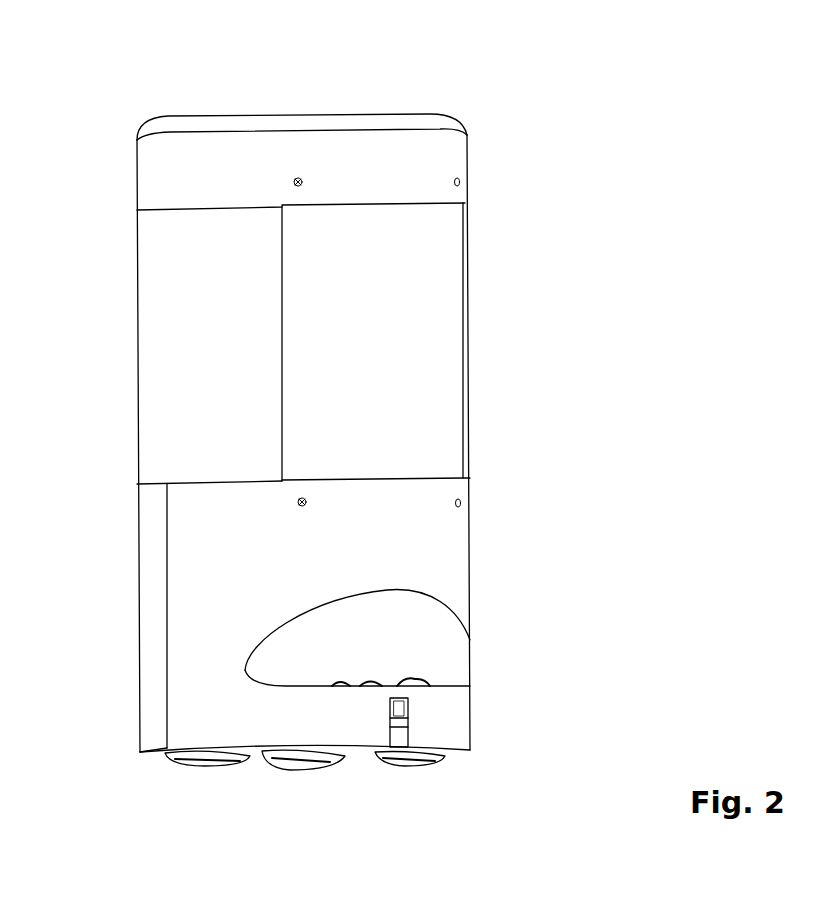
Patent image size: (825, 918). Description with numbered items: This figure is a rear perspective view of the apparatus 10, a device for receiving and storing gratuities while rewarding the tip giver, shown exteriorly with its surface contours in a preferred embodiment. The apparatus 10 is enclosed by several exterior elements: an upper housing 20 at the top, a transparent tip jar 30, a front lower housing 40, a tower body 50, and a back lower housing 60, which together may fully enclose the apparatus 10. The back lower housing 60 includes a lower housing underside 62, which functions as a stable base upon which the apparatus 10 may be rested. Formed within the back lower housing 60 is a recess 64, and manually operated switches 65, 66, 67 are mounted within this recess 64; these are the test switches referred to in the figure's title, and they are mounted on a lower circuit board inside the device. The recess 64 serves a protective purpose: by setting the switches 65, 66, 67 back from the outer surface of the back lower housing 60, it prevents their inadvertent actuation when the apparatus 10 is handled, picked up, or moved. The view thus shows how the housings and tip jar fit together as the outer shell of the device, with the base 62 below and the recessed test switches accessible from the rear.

The apparatus 10 is at (517, 93).
The upper housing 20 is at (143, 175).
The transparent tip jar 30 is at (158, 362).
The front lower housing 40 is at (160, 608).
The tower body 50 is at (445, 370).
The back lower housing 60 is at (457, 540).
The lower housing underside 62 is at (253, 754).
The recess 64 is at (357, 638).
The manually operated switch 65 is at (410, 660).
The manually operated switch 66 is at (371, 684).
The manually operated switch 67 is at (413, 682).